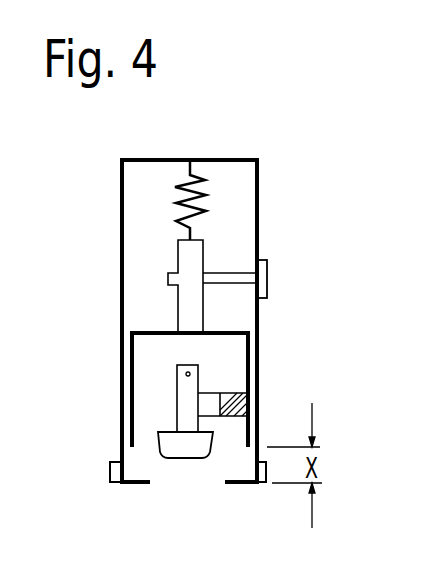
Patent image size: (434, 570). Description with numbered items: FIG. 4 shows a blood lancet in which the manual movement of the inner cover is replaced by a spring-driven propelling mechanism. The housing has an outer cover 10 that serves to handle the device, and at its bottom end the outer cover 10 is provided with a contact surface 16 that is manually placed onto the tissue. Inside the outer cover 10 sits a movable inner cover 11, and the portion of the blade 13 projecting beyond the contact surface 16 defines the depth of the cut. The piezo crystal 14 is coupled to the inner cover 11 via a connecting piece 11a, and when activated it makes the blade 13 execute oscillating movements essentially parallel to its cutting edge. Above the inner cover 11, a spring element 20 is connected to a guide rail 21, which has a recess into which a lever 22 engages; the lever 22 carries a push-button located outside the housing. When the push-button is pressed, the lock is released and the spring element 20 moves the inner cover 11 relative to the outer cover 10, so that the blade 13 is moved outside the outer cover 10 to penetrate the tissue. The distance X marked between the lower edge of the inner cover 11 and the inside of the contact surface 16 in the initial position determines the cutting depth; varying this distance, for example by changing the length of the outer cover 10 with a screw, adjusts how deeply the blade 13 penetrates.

The outer cover 10 is at (232, 160).
The inner cover 11 is at (240, 333).
The connecting piece 11a is at (245, 402).
The blade 13 is at (190, 452).
The piezo crystal 14 is at (210, 385).
The contact surface 16 is at (145, 482).
The spring element 20 is at (206, 212).
The guide rail 21 is at (193, 258).
The lever 22 is at (267, 283).